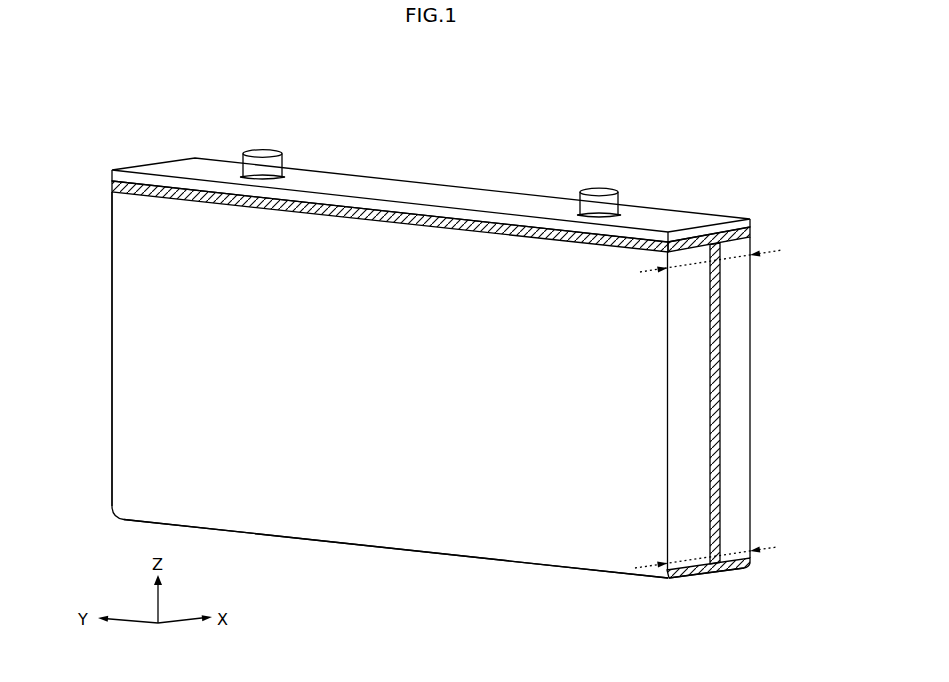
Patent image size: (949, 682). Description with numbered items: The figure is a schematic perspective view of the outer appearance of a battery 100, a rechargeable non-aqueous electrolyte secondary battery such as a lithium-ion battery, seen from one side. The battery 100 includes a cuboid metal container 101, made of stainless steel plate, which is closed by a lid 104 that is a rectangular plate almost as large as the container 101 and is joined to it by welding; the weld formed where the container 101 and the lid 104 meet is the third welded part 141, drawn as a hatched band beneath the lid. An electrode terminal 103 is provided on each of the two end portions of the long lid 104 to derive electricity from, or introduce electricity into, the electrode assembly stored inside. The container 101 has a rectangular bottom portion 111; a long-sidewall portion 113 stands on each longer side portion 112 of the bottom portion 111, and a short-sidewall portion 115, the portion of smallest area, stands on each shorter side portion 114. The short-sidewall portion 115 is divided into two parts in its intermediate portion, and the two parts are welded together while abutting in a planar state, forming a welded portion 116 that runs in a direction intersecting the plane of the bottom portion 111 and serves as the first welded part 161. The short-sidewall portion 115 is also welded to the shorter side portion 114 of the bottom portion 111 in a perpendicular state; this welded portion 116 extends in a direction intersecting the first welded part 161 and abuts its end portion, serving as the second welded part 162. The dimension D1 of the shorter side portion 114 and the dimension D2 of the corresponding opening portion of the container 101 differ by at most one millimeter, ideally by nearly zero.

The battery 100 is at (718, 145).
The container 101 is at (108, 402).
The electrode terminal 103 is at (258, 152).
The lid 104 is at (510, 203).
The bottom portion 111 is at (550, 565).
The longer side portion 112 is at (470, 550).
The long-sidewall portion 113 is at (133, 320).
The shorter side portion 114 is at (690, 577).
The short-sidewall portion 115 is at (738, 442).
The welded portion 116 is at (720, 350).
The third welded part 141 is at (750, 235).
The first welded part 161 is at (715, 403).
The second welded part 162 is at (708, 568).
The dimension D1 is at (767, 547).
The dimension D2 is at (770, 258).